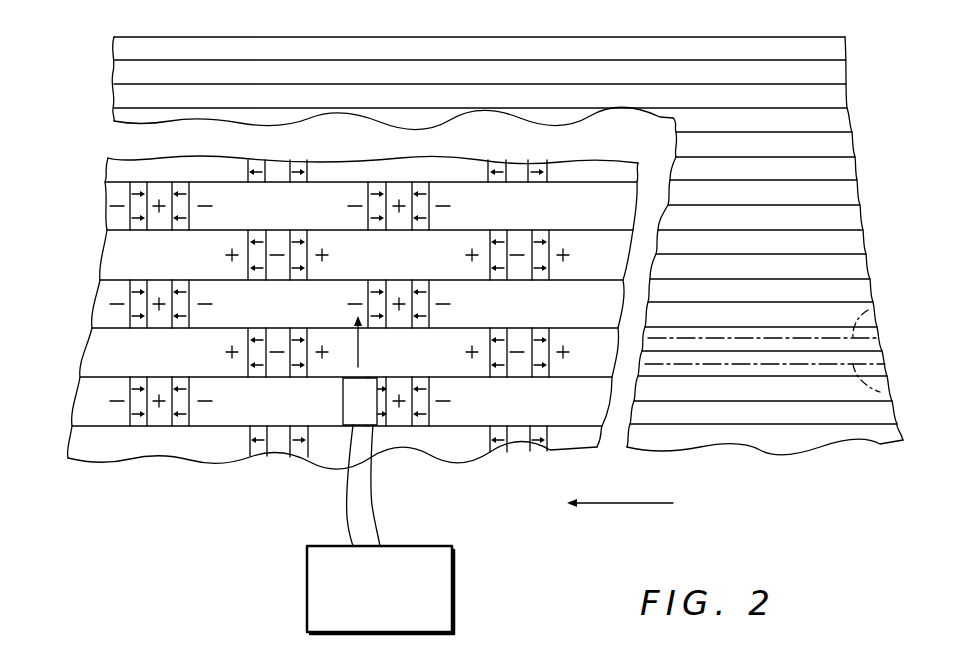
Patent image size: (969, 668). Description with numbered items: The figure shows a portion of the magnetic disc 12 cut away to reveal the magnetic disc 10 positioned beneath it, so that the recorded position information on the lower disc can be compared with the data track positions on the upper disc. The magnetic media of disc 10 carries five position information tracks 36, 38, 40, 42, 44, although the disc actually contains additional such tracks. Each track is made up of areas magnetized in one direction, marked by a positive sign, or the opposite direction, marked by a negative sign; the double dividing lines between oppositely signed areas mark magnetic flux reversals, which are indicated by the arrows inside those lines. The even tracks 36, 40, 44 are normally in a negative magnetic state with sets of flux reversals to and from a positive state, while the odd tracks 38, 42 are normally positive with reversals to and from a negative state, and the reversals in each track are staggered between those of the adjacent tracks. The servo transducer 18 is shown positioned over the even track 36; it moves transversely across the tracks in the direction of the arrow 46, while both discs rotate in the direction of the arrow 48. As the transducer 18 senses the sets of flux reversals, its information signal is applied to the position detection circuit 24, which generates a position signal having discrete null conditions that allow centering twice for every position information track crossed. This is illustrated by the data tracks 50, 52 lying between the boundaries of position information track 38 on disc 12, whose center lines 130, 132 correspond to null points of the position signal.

The magnetic disc 10 is at (571, 449).
The magnetic disc 12 is at (812, 446).
The servo transducer 18 is at (343, 397).
The position detection circuit 24 is at (454, 573).
The position information track 36 is at (92, 404).
The position information track 38 is at (100, 353).
The position information track 40 is at (115, 299).
The position information track 42 is at (120, 249).
The position information track 44 is at (117, 193).
The arrow 46 is at (361, 350).
The arrow 48 is at (643, 504).
The data track 50 is at (880, 358).
The data track 52 is at (872, 345).
The center line 130 is at (868, 310).
The center line 132 is at (880, 392).